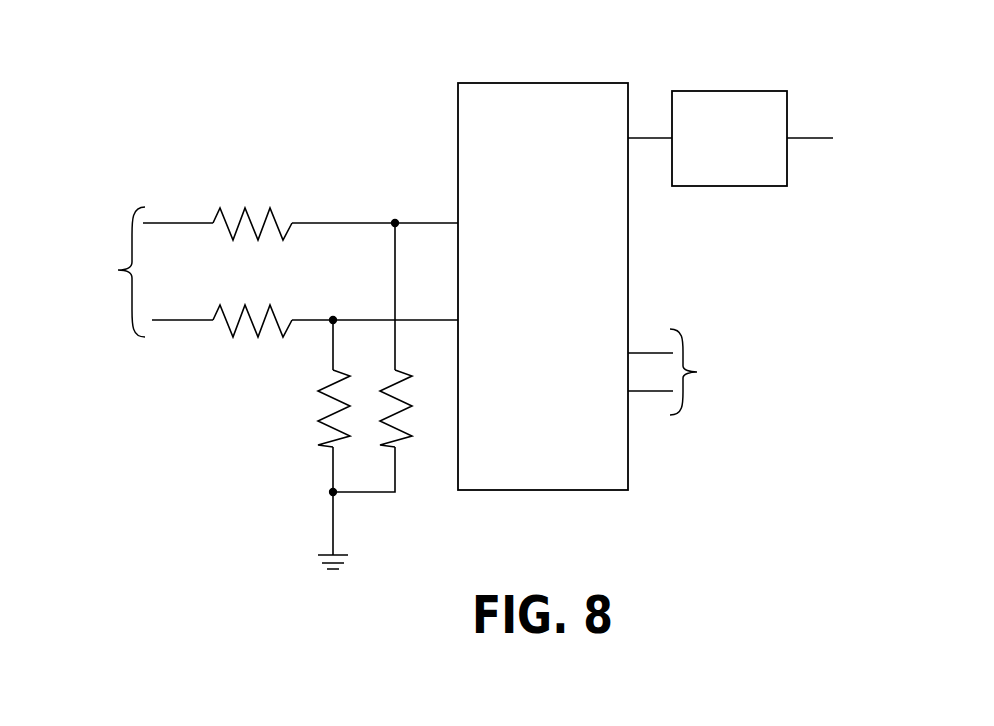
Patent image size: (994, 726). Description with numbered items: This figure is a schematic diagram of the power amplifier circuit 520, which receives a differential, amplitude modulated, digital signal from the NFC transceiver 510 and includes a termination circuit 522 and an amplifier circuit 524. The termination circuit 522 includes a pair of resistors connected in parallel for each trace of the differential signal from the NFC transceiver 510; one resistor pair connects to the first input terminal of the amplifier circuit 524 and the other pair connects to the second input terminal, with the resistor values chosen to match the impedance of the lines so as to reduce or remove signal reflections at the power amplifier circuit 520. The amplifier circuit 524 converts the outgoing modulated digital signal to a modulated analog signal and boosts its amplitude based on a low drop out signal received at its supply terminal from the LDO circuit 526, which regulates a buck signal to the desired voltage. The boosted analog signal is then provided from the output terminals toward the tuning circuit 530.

The NFC transceiver 510 is at (473, 206).
The power amplifier circuit 520 is at (351, 124).
The termination circuit 522 is at (218, 396).
The amplifier circuit 524 is at (628, 467).
The LDO circuit 526 is at (747, 88).
The tuning circuit 530 is at (725, 373).